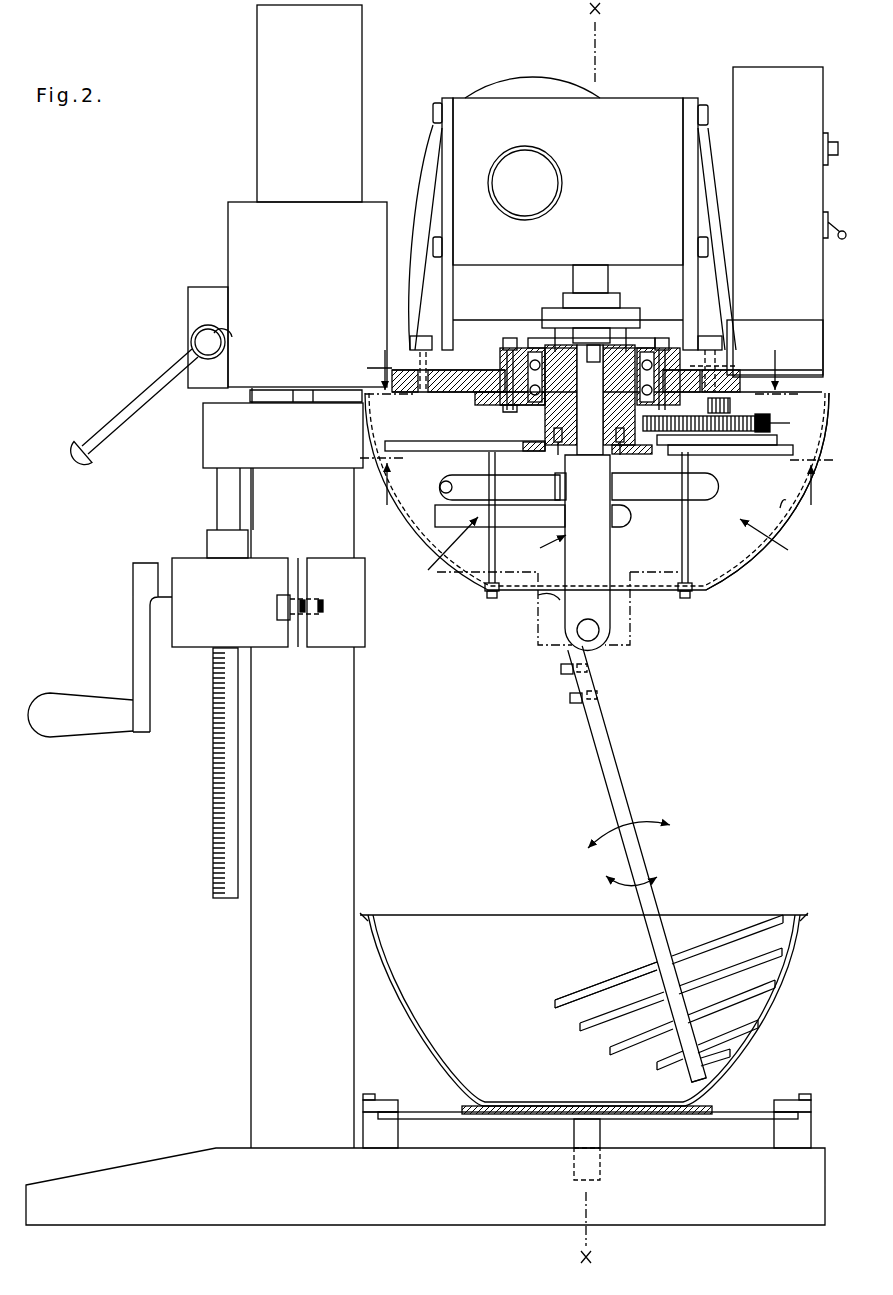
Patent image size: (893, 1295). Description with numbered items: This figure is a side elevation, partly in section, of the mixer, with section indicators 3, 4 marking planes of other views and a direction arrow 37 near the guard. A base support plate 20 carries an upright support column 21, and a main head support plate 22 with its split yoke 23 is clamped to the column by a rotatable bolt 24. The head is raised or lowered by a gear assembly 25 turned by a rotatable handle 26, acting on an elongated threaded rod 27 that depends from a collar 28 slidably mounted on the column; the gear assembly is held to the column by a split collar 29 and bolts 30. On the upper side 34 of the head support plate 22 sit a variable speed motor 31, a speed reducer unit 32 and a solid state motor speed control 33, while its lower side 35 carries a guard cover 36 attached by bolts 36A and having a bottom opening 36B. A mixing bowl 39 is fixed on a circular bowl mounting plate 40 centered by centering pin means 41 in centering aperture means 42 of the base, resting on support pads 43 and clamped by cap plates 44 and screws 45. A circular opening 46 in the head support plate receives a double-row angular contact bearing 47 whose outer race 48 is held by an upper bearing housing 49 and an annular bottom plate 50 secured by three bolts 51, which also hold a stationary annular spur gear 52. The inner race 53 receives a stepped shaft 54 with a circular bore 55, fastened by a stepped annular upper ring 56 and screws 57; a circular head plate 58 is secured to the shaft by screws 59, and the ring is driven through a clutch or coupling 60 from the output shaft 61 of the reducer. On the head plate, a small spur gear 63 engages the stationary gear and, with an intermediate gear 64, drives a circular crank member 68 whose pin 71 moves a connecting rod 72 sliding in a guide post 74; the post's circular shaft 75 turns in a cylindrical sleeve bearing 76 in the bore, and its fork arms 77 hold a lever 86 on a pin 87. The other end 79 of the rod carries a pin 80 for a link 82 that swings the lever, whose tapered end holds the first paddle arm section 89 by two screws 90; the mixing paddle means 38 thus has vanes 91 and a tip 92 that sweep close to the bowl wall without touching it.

The section line 3- 3 is at (582, 359).
The section line 4- 4 is at (597, 495).
The base support plate 20 is at (384, 1222).
The upright support column 21 is at (250, 1020).
The main head support plate 22 is at (808, 392).
The split yoke or collar assembly 23 is at (230, 228).
The rotatable bolt 24 is at (200, 342).
The gear assembly 25 is at (187, 645).
The rotatable handle 26 is at (52, 732).
The elongated threaded rod 27 is at (212, 835).
The collar 28 is at (207, 430).
The split collar 29 is at (365, 618).
The bolts 30 is at (277, 605).
The variable speed motor 31 is at (528, 80).
The speed reducer unit 32 is at (640, 100).
The solid state motor speed control 33 is at (783, 67).
The upper side 34 is at (808, 365).
The lower side 35 is at (792, 424).
The guard cover 36 is at (728, 575).
The bolts 36A is at (490, 599).
The opening 36B is at (640, 600).
The housing direction arrow 37 is at (776, 547).
The mixing paddle means 38 is at (676, 938).
The mixing bowl 39 is at (795, 968).
The circular bowl mounting plate 40 is at (722, 1106).
The centering pin means 41 is at (601, 1135).
The centering aperture means 42 is at (601, 1165).
The support pads 43 is at (400, 1135).
The cap plates 44 is at (385, 1103).
The screws 45 is at (369, 1094).
The circular opening 46 is at (715, 375).
The double-row angular contact bearing 47 is at (508, 365).
The outer race 48 is at (535, 410).
The upper bearing housing 49 is at (712, 350).
The annular bottom plate 50 is at (510, 413).
The bolts 51 is at (507, 338).
The annular spur gear 52 is at (475, 398).
The inner race 53 is at (589, 400).
The stepped shaft 54 is at (535, 452).
The circular bore 55 is at (560, 455).
The stepped annular upper ring 56 is at (545, 335).
The screws 57 is at (645, 355).
The circular head plate 58 is at (418, 458).
The screws 59 is at (622, 456).
The clutch or coupling 60 is at (603, 316).
The output shaft 61 is at (573, 282).
The small spur gear 63 is at (745, 405).
The intermediate gear 64 is at (717, 457).
The circular crank member 68 is at (786, 502).
The pin 71 is at (680, 505).
The connecting rod 72 is at (696, 492).
The guide post 74 is at (540, 547).
The circular shaft 75 is at (582, 553).
The cylindrical sleeve bearing 76 is at (607, 395).
The fork arms 77 is at (540, 605).
The other end 79 is at (480, 490).
The pin 80 is at (425, 528).
The link 82 is at (443, 556).
The lever 86 is at (795, 450).
The pin 87 is at (600, 642).
The first paddle arm section 89 is at (626, 793).
The screws 90 is at (568, 698).
The vanes 91 is at (560, 1012).
The tip 92 is at (690, 1082).